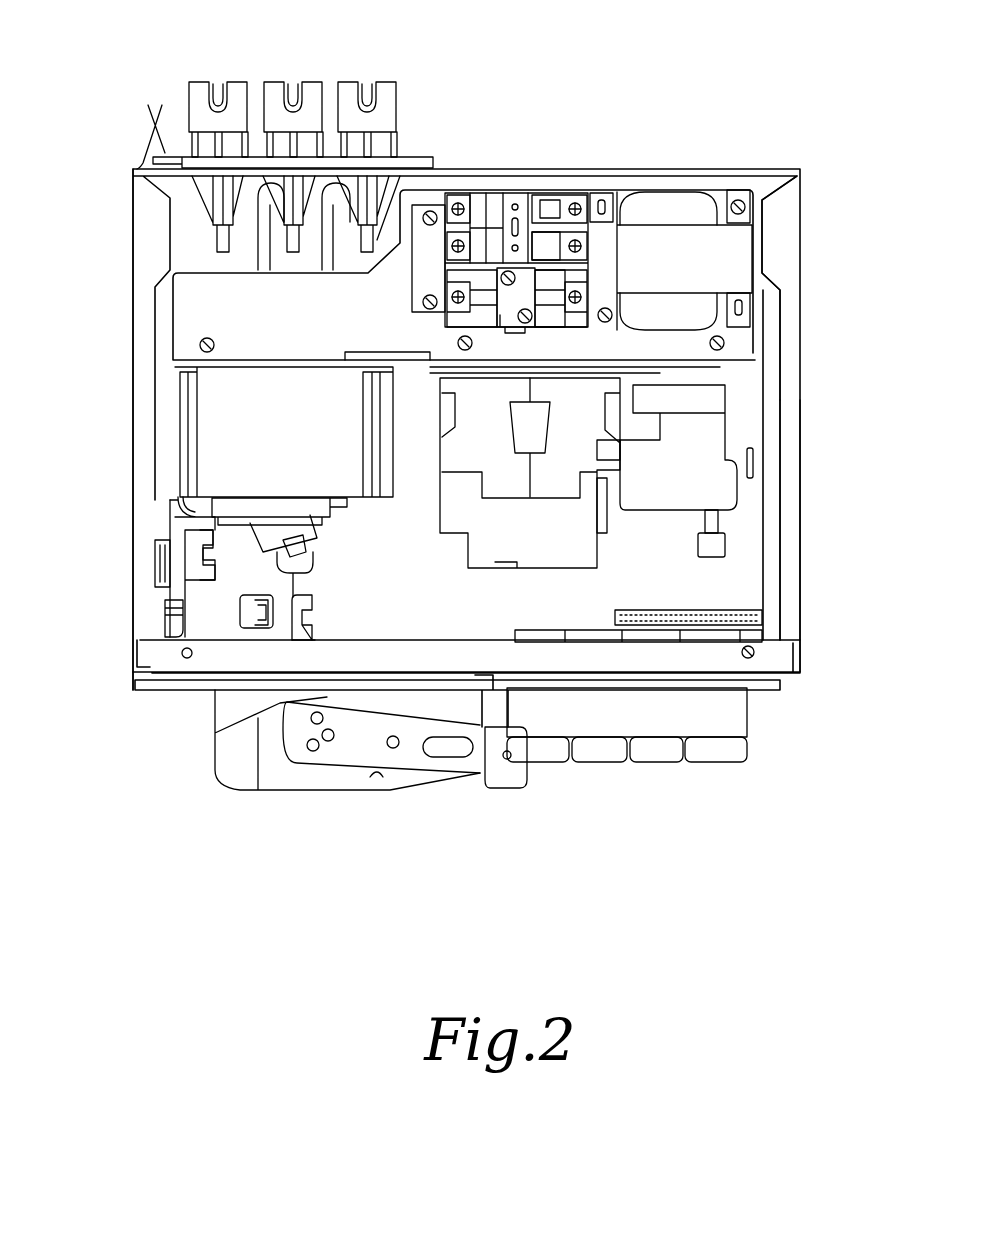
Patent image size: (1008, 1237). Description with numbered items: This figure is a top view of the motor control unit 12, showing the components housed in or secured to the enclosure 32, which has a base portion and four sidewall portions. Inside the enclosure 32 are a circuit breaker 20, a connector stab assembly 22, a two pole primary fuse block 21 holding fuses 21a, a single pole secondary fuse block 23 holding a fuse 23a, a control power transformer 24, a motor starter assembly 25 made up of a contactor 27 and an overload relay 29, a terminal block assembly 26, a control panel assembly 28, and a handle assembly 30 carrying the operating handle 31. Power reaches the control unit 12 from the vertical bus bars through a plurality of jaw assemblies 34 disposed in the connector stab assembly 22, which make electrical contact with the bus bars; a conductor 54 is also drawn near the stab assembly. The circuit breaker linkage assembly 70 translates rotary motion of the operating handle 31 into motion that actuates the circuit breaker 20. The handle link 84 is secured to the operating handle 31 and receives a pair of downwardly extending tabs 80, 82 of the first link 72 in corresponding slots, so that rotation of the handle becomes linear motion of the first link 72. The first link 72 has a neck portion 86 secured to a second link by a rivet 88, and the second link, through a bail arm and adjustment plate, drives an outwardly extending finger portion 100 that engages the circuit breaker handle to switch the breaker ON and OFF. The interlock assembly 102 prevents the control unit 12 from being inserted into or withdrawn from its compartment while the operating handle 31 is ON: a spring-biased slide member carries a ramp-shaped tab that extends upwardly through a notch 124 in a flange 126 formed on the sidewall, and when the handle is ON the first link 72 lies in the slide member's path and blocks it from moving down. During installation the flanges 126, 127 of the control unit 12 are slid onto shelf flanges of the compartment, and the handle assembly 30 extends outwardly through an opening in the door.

The control unit 12 is at (393, 903).
The circuit breaker 20 is at (215, 433).
The two pole primary fuse block 21 is at (512, 192).
The fuses 21a is at (547, 245).
The connector stab assembly 22 is at (402, 148).
The single pole secondary fuse block 23 is at (523, 322).
The fuses 23a is at (560, 295).
The transformer 24 is at (718, 260).
The motor starter assembly 25 is at (610, 532).
The terminal block assembly 26 is at (800, 643).
The contactor 27 is at (467, 568).
The control panel assembly 28 is at (747, 737).
The overload relay 29 is at (737, 500).
The handle assembly 30 is at (280, 783).
The operating handle 31 is at (452, 767).
The enclosure 32 is at (802, 592).
The jaw assemblies 34 is at (227, 92).
The conductor 54 is at (300, 258).
The circuit breaker linkage assembly 70 is at (268, 582).
The first link 72 is at (198, 593).
The tab 80 is at (312, 605).
The tab 82 is at (253, 623).
The handle link 84 is at (308, 627).
The neck portion 86 is at (185, 530).
The rivet 88 is at (175, 500).
The finger portion 100 is at (312, 548).
The interlock assembly 102 is at (172, 565).
The notch 124 is at (178, 623).
The flange 126 is at (148, 237).
The flange 127 is at (785, 225).